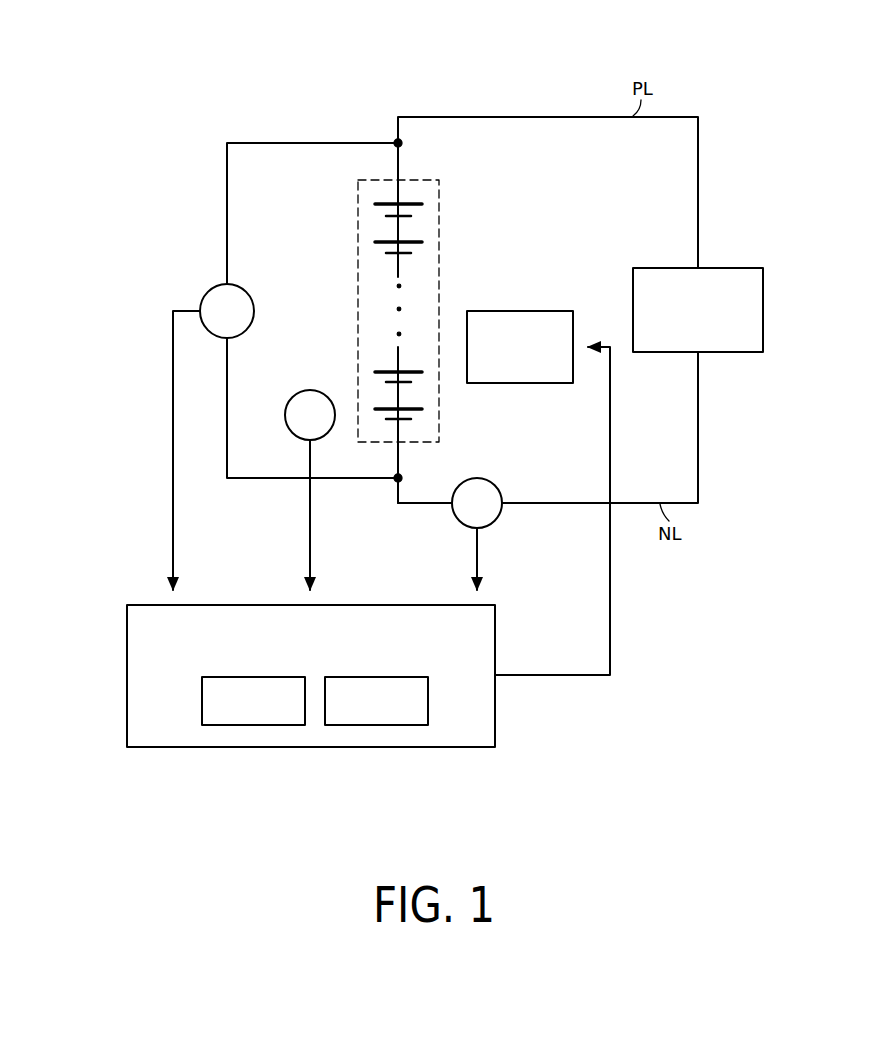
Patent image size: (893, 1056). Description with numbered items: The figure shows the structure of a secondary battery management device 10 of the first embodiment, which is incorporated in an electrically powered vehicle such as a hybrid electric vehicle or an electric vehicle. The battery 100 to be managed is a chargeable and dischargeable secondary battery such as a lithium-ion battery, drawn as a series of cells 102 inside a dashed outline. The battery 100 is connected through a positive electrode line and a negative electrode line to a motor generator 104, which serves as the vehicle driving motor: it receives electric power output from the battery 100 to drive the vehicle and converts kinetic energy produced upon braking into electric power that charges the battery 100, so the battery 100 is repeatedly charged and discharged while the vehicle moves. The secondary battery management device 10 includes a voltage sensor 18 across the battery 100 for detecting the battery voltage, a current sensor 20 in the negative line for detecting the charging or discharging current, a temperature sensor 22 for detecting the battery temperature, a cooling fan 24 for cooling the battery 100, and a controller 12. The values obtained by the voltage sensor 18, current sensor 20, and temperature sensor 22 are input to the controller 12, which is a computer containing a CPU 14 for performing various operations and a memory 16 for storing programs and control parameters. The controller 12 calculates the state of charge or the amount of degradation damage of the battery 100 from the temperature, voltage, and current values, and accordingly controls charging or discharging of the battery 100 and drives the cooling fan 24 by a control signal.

The secondary battery management device 10 is at (372, 82).
The controller 12 is at (127, 638).
The CPU 14 is at (252, 726).
The memory 16 is at (377, 726).
The voltage sensor 18 is at (210, 290).
The current sensor 20 is at (486, 480).
The temperature sensor 22 is at (318, 391).
The cooling fan 24 is at (540, 310).
The battery 100 is at (428, 180).
The battery cells 102 is at (422, 211).
The motor generator 104 is at (736, 267).